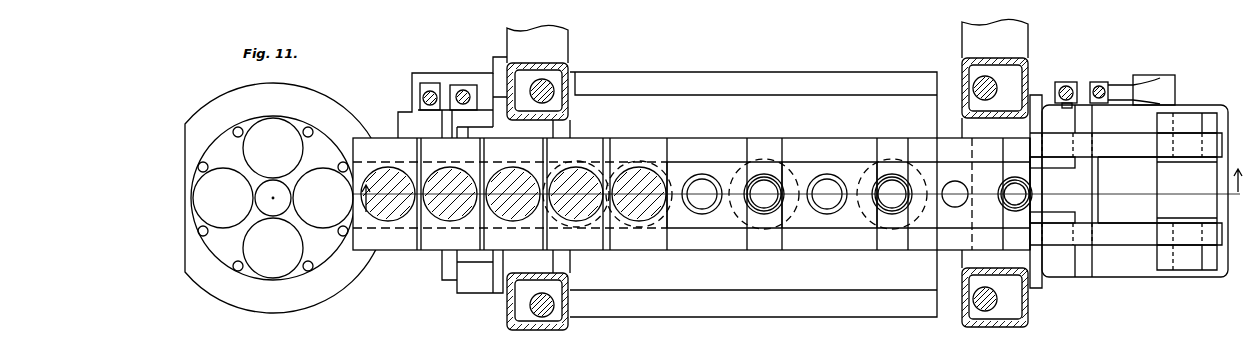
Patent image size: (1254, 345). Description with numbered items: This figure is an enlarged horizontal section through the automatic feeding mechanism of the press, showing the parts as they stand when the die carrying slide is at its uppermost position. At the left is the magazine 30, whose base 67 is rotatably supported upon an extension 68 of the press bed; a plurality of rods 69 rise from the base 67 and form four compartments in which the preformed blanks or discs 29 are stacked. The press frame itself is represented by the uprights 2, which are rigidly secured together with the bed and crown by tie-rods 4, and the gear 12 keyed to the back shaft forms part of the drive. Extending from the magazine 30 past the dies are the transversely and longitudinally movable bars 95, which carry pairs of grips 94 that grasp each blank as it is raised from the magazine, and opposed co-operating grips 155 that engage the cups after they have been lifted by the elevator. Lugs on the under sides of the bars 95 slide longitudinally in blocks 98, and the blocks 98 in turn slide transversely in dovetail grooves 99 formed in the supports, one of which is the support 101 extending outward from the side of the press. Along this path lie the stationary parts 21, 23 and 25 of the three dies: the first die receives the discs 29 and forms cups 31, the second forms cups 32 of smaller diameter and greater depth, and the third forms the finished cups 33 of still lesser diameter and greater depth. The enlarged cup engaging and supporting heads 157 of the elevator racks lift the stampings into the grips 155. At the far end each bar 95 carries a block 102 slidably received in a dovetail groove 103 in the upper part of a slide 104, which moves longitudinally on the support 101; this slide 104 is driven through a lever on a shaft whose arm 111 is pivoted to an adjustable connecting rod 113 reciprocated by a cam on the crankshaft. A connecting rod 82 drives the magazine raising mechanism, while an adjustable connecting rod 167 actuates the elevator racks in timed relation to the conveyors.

The uprights 2 is at (560, 47).
The tie-rods 4 is at (542, 84).
The gear 12 is at (358, 198).
The stationary part 21 is at (677, 214).
The stationary part 23 is at (789, 205).
The stationary part 25 is at (863, 216).
The discs 29 is at (432, 198).
The magazine 30 is at (245, 282).
The cups 31 is at (777, 185).
The cups 32 is at (900, 182).
The finished cups 33 is at (1023, 195).
The base 67 is at (316, 268).
The extension 68 is at (219, 302).
The rods 69 is at (233, 131).
The connecting rod 82 is at (420, 98).
The grips 94 is at (632, 250).
The bars 95 is at (725, 138).
The blocks 98 is at (472, 131).
The dovetail grooves 99 is at (484, 122).
The support 101 is at (1122, 274).
The block 102 is at (1185, 117).
The dovetail groove 103 is at (1208, 117).
The slide 104 is at (1182, 175).
The arm 111 is at (1122, 86).
The connecting rod 113 is at (1099, 88).
The grips 155 is at (770, 148).
The head 157 is at (703, 175).
The connecting rod 167 is at (463, 90).